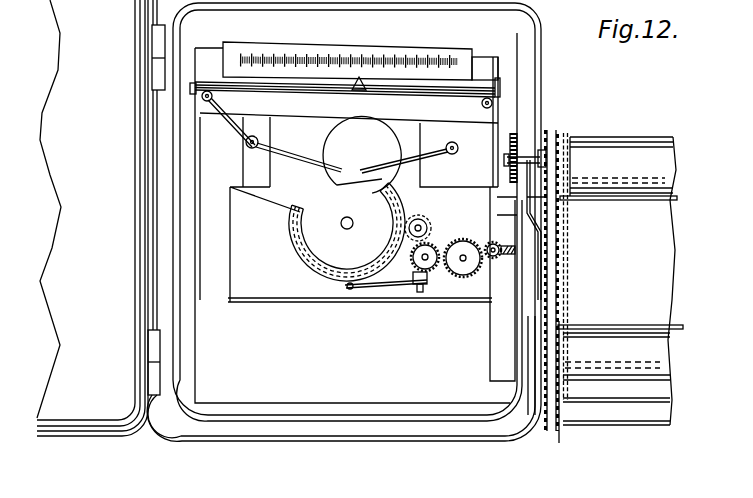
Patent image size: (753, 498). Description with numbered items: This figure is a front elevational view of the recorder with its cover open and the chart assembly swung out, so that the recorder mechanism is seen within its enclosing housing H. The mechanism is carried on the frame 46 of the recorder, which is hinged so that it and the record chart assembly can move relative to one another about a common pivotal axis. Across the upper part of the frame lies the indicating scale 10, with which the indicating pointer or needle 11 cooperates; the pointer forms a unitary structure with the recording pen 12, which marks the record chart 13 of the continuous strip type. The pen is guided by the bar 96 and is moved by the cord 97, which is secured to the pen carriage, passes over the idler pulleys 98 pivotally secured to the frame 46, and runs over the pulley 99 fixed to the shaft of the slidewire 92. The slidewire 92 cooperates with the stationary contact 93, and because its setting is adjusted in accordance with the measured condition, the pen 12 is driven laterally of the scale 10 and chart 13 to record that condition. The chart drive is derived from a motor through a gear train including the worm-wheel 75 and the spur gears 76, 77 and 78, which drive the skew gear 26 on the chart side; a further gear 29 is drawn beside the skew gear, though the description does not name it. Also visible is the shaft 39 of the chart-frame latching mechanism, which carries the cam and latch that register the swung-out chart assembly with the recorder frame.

The indicating scale 10 is at (460, 52).
The indicating pointer or needle 11 is at (359, 78).
The recording pen 12 is at (366, 95).
The record chart 13 is at (617, 152).
The skew gear 26 is at (500, 259).
The driving gear 29 is at (513, 141).
The shaft 39 is at (619, 327).
The frame of the recorder mechanism 46 is at (202, 235).
The worm-wheel 75 is at (428, 215).
The spur gear 76 is at (428, 222).
The spur gear 77 is at (437, 250).
The spur gear 78 is at (466, 272).
The slidewire 92 is at (312, 250).
The stationary contact 93 is at (353, 290).
The bar 96 is at (240, 88).
The cord 97 is at (300, 91).
The idler pulleys 98 is at (214, 97).
The pulley 99 is at (318, 186).
The housing H is at (283, 427).